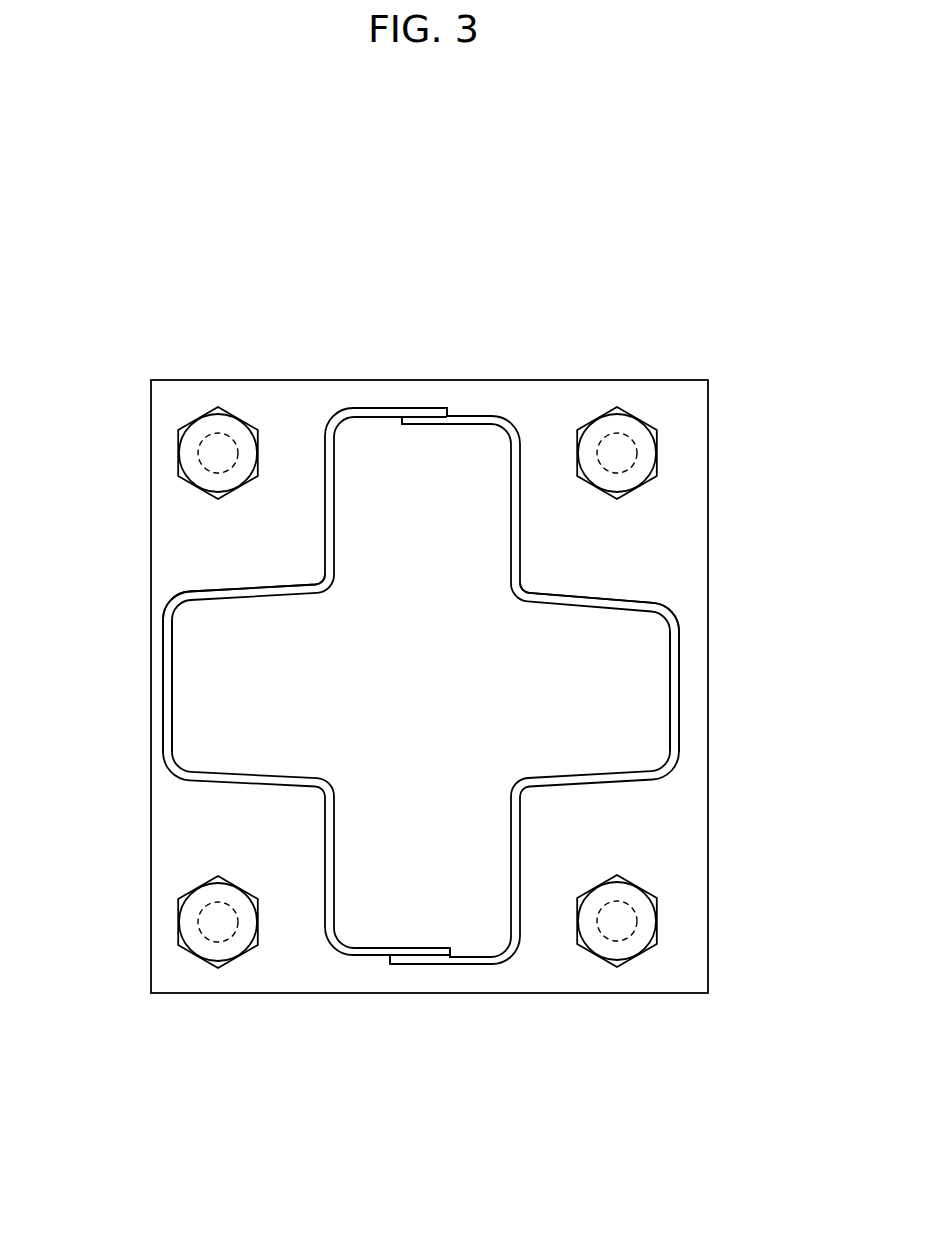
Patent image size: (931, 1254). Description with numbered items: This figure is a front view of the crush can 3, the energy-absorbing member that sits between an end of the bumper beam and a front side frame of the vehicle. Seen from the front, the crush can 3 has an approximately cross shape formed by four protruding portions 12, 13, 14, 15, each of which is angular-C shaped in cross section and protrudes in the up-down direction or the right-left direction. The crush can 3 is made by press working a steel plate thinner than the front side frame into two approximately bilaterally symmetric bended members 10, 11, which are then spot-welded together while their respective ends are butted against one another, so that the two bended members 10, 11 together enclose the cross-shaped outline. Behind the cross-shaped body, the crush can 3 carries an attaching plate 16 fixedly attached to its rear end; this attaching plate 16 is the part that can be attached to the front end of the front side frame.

The crush can 3 is at (508, 406).
The bended member 10 is at (670, 605).
The bended member 11 is at (193, 593).
The protruding portion 12 is at (408, 408).
The protruding portion 13 is at (450, 963).
The protruding portion 14 is at (680, 697).
The protruding portion 15 is at (163, 703).
The attaching plate 16 is at (672, 413).